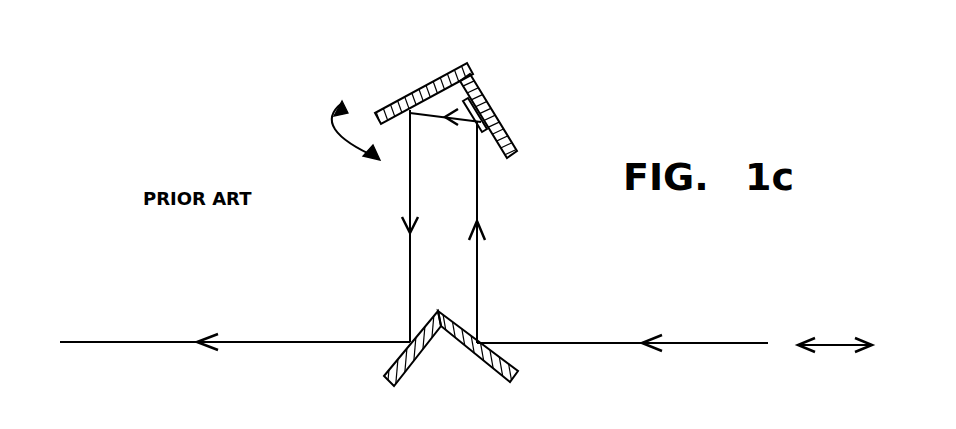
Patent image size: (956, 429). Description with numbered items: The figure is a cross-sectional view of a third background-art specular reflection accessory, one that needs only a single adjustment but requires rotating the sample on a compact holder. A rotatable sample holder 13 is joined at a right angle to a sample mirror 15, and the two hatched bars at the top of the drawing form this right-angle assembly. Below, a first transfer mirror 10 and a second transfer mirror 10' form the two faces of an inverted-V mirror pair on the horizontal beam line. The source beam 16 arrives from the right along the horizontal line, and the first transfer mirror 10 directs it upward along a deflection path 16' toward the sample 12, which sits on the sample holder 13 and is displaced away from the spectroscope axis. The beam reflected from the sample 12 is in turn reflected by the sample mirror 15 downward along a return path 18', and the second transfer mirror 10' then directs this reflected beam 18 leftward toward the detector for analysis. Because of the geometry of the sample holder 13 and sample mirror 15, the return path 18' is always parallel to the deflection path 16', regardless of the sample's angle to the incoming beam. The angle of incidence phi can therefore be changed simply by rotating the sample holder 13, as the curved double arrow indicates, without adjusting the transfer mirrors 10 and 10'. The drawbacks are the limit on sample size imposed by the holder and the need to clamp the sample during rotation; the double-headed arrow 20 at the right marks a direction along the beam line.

The first transfer mirror 10 is at (489, 361).
The second transfer mirror 10' is at (386, 360).
The sample 12 is at (482, 124).
The rotatable sample holder 13 is at (478, 85).
The sample mirror 15 is at (402, 98).
The source beam 16 is at (622, 318).
The deflection path 16' is at (506, 232).
The reflected beam 18 is at (235, 367).
The return path 18' is at (372, 226).
The displacement direction 20 is at (828, 352).